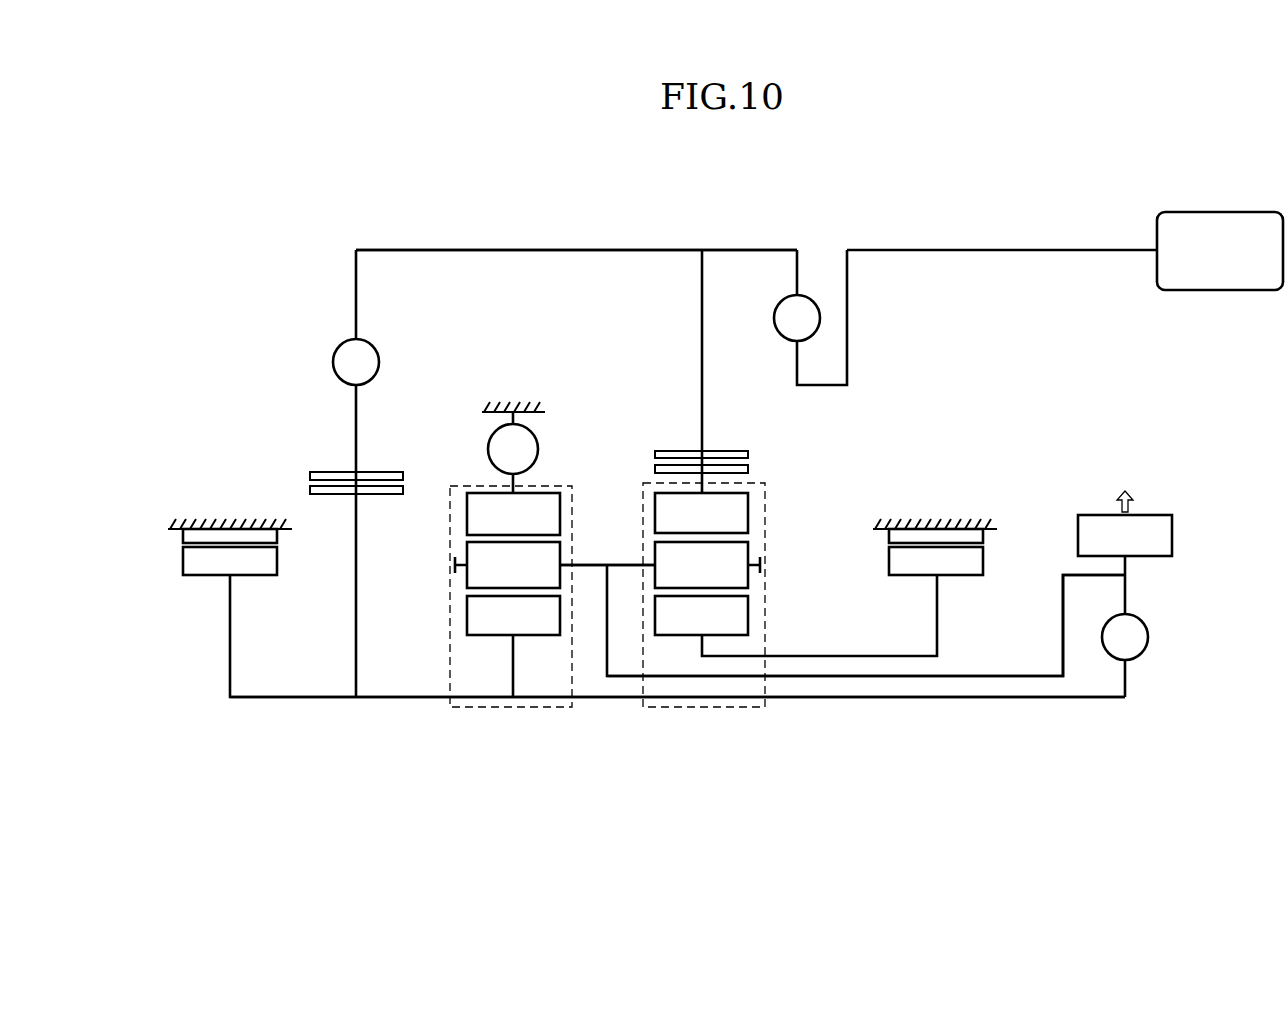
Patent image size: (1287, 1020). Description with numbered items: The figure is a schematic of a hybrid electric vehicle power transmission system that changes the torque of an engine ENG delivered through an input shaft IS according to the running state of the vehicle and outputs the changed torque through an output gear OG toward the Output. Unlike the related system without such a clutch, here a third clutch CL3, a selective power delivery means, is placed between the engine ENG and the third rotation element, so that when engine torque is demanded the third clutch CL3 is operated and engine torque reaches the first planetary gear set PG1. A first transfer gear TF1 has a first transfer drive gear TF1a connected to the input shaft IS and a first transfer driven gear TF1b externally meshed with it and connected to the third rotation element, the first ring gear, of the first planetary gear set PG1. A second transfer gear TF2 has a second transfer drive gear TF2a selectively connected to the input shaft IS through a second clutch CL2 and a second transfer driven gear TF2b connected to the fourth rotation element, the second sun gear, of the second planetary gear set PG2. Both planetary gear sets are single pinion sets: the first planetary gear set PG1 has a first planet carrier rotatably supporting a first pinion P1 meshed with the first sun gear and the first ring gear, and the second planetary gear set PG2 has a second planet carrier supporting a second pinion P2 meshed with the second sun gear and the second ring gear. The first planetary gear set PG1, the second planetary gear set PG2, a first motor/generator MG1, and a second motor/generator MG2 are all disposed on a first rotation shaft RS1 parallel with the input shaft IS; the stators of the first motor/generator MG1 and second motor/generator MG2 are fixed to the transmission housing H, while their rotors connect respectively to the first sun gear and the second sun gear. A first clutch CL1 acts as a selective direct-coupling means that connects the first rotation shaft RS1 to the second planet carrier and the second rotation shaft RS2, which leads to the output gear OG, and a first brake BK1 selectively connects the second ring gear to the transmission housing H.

The input shaft IS is at (744, 248).
The engine ENG is at (1220, 251).
The first clutch CL1 is at (1125, 637).
The second clutch CL2 is at (356, 362).
The third clutch CL3 is at (797, 318).
The first brake BK1 is at (513, 449).
The first transfer gear TF1 is at (770, 449).
The first transfer drive gear TF1a is at (750, 452).
The first transfer driven gear TF1b is at (750, 469).
The second transfer gear TF2 is at (301, 443).
The second transfer drive gear TF2a is at (325, 470).
The second transfer driven gear TF2b is at (307, 490).
The transmission housing H is at (193, 516).
The first planetary gear set PG1 is at (704, 634).
The second planetary gear set PG2 is at (511, 635).
The first pinion P1 is at (701, 565).
The second pinion P2 is at (513, 565).
The first motor/generator MG1 is at (884, 565).
The second motor/generator MG2 is at (194, 580).
The output gear OG is at (1125, 535).
The output Output is at (1127, 488).
The first rotation shaft RS1 is at (862, 698).
The second rotation shaft RS2 is at (998, 677).